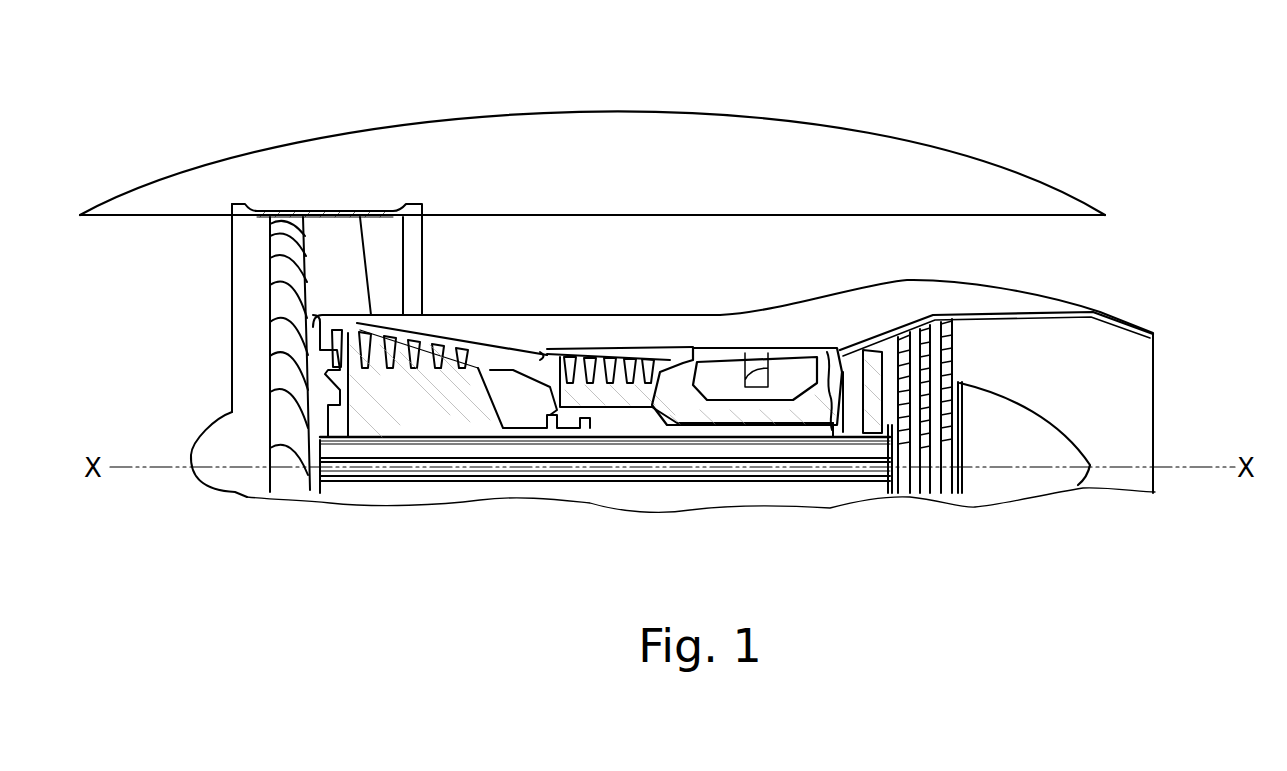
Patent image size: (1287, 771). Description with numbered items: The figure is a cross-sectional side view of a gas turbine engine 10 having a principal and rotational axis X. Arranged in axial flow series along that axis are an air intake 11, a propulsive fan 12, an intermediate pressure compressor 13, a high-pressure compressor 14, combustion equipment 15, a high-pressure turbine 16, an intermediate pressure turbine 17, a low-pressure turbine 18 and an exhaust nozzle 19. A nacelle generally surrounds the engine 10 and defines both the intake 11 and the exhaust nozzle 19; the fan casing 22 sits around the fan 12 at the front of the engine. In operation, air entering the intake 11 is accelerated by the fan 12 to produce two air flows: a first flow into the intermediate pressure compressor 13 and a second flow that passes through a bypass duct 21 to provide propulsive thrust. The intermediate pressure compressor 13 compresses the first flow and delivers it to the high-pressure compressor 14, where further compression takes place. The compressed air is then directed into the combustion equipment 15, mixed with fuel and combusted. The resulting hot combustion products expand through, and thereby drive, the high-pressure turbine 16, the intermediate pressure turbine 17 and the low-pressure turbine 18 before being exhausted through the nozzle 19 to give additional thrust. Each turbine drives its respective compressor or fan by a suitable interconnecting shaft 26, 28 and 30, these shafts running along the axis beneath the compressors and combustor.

The gas turbine engine 10 is at (580, 252).
The air intake 11 is at (192, 318).
The propulsive fan 12 is at (292, 243).
The intermediate pressure compressor 13 is at (448, 400).
The high-pressure compressor 14 is at (607, 357).
The combustion equipment 15 is at (758, 343).
The high-pressure turbine 16 is at (827, 363).
The intermediate pressure turbine 17 is at (872, 330).
The low-pressure turbine 18 is at (953, 327).
The exhaust nozzle 19 is at (1140, 402).
The bypass duct 21 is at (687, 137).
The fan casing 22 is at (340, 260).
The interconnecting shaft 26 is at (787, 420).
The interconnecting shaft 28 is at (557, 437).
The interconnecting shaft 30 is at (493, 480).